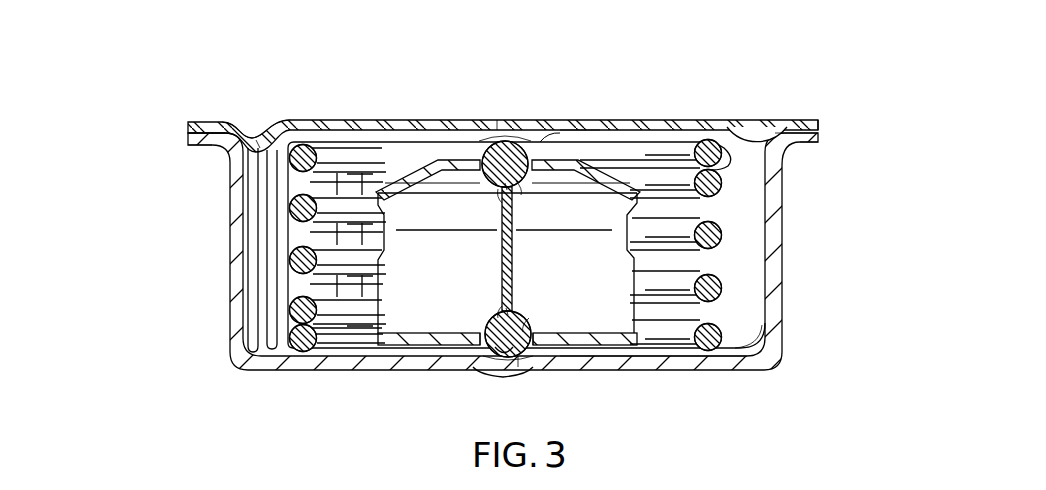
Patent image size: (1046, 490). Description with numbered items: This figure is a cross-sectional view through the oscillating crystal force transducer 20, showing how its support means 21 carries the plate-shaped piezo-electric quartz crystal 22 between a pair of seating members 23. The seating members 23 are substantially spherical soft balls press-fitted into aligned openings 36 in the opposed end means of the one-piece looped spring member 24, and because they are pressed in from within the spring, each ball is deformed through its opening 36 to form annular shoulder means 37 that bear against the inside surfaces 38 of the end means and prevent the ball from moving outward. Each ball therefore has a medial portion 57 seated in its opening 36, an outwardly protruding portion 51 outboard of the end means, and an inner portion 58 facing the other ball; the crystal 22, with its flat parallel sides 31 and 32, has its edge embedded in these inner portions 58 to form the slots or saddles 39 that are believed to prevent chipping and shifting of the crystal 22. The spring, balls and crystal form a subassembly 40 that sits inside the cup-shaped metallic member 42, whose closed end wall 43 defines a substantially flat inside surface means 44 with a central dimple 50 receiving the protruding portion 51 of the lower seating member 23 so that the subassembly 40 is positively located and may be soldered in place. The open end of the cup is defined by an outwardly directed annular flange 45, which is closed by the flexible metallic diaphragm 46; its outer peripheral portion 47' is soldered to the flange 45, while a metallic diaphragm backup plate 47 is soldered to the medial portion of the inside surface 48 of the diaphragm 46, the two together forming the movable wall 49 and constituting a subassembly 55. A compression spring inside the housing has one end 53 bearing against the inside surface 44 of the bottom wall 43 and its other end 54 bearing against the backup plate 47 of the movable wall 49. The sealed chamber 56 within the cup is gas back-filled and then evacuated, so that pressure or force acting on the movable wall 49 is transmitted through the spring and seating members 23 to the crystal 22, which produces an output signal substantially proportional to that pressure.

The oscillating crystal force transducer 20 is at (800, 64).
The support means 21 is at (790, 268).
The plate-shaped piezo-electric quartz crystal 22 is at (500, 256).
The seating members 23 is at (520, 118).
The looped spring member 24 is at (572, 118).
The flat parallel side 31 is at (500, 268).
The flat parallel side 32 is at (515, 250).
The openings 36 is at (486, 146).
The annular shoulder means 37 is at (555, 118).
The inside surfaces 38 is at (412, 330).
The slots or saddles 39 is at (500, 196).
The subassembly 40 is at (414, 160).
The cup-shaped metallic member 42 is at (224, 263).
The closed end wall 43 is at (664, 370).
The inside surface means 44 is at (747, 348).
The annular flange 45 is at (818, 135).
The flexible metallic diaphragm 46 is at (645, 118).
The diaphragm backup plate 47 is at (287, 100).
The outer peripheral portion 47' is at (800, 107).
The inside surface 48 is at (683, 118).
The movable wall 49 is at (277, 115).
The dimple or indentation 50 is at (497, 374).
The outwardly protruding portion 51 is at (497, 118).
The end of compression spring 53 is at (742, 340).
The other end of compression spring 54 is at (730, 162).
The subassembly 55 is at (322, 115).
The chamber 56 is at (738, 248).
The medial portion 57 is at (518, 184).
The inner portion 58 is at (522, 190).